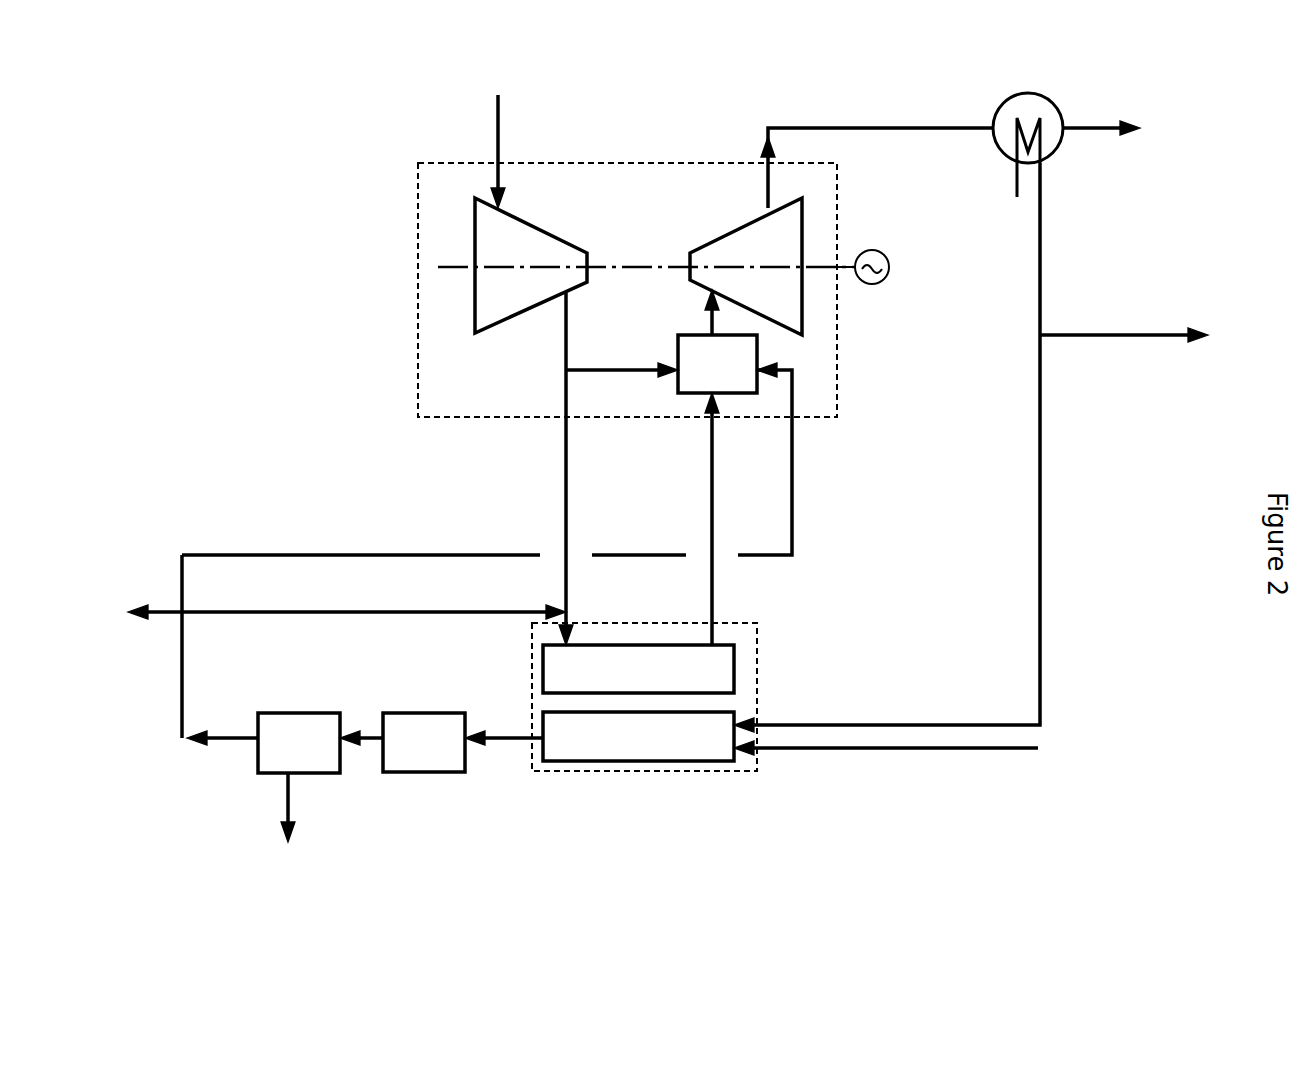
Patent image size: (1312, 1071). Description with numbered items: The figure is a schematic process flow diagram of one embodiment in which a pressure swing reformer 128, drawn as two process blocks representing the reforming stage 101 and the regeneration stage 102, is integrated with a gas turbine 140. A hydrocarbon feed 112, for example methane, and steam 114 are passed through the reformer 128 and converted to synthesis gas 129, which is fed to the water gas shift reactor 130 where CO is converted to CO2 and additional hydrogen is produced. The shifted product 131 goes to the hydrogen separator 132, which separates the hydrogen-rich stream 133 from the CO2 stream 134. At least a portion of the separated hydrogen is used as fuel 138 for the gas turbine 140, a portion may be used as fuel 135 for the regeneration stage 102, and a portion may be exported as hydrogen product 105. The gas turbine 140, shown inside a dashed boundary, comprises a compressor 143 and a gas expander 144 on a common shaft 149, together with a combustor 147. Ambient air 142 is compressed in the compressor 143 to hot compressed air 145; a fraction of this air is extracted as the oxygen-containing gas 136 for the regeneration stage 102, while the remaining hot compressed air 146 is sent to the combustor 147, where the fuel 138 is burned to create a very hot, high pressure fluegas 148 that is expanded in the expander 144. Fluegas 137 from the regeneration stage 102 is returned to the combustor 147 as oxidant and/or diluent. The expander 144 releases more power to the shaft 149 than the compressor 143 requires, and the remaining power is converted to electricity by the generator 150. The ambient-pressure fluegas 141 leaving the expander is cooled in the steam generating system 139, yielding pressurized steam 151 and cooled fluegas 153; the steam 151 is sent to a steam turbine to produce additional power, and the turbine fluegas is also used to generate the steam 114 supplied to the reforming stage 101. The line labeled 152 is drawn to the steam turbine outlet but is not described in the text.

The reforming stage 101 is at (734, 716).
The regeneration stage 102 is at (735, 677).
The hydrogen product 105 is at (160, 610).
The hydrocarbon feed 112 is at (1007, 752).
The steam 114 is at (1042, 698).
The pressure swing reformer 128 is at (643, 771).
The synthesis gas 129 is at (490, 742).
The water gas shift reactor 130 is at (443, 773).
The shifted product 131 is at (370, 733).
The hydrogen separator 132 is at (327, 775).
The hydrogen stream 133 is at (180, 697).
The CO2 stream 134 is at (283, 800).
The hydrogen fuel for regeneration 135 is at (442, 613).
The oxygen-containing gas 136 is at (568, 573).
The regeneration fluegas 137 is at (710, 614).
The fuel 138 is at (791, 511).
The steam generating system 139 is at (1052, 155).
The gas turbine 140 is at (837, 337).
The ambient-pressure fluegas 141 is at (860, 130).
The ambient air 142 is at (500, 152).
The compressor 143 is at (473, 328).
The gas expander 144 is at (725, 237).
The hot compressed air 145 is at (563, 325).
The remaining hot compressed air 146 is at (580, 367).
The combustor 147 is at (717, 364).
The high pressure fluegas 148 is at (707, 317).
The common shaft 149 is at (640, 265).
The generator 150 is at (882, 277).
The pressurized steam 151 is at (1037, 293).
The steam line to steam turbine 152 is at (1100, 333).
The cooled fluegas 153 is at (1110, 137).